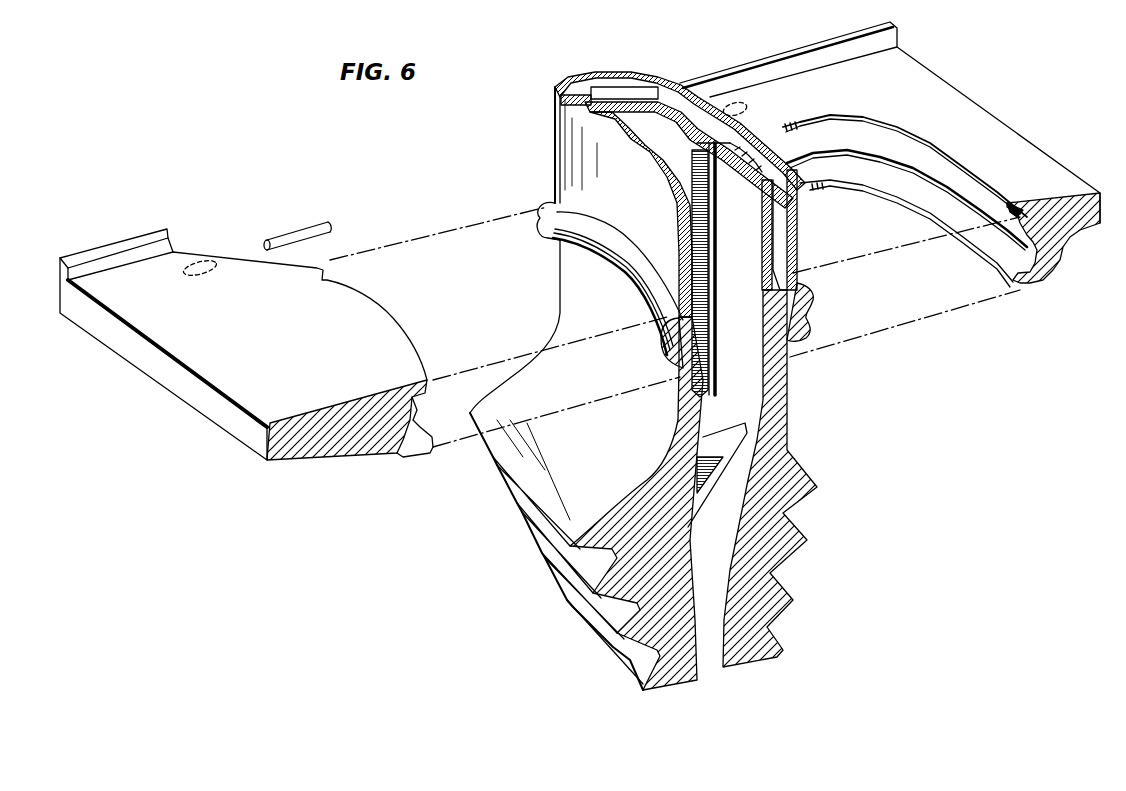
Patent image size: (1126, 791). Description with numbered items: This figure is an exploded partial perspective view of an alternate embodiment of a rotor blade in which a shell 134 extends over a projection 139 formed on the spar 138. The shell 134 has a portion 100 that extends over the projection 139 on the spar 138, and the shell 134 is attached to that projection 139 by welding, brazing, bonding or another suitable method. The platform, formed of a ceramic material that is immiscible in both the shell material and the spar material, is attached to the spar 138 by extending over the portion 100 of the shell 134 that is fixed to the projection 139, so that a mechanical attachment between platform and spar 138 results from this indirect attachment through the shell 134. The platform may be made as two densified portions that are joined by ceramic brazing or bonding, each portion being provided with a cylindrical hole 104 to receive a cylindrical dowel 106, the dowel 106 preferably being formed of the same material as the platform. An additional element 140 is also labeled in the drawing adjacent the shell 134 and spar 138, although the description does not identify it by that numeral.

The portion of the shell 100 is at (662, 355).
The cylindrical hole 104 is at (210, 257).
The cylindrical dowel 106 is at (313, 227).
The shell 134 is at (633, 222).
The spar 138 is at (778, 477).
The projection 139 is at (763, 323).
The ring wall 140 is at (763, 238).